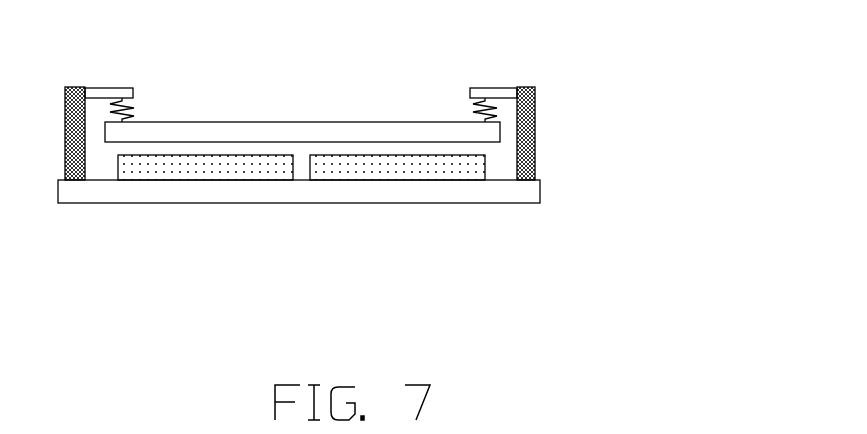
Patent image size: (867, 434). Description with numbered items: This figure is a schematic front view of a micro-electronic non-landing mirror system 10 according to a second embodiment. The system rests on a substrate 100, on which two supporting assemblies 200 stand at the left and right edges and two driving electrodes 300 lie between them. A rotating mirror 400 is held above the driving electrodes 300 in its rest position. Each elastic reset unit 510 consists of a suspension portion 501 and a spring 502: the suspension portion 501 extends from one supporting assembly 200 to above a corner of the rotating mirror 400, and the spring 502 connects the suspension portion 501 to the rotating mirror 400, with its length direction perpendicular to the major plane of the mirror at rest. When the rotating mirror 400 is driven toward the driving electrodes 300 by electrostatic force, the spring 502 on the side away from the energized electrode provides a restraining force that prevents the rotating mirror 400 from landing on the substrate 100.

The micro-electronic non-landing mirror system 10 is at (530, 26).
The substrate 100 is at (531, 196).
The supporting assembly 200 is at (539, 138).
The driving electrode 300 is at (369, 168).
The rotating mirror 400 is at (261, 132).
The suspension portion 501 is at (128, 85).
The spring 502 is at (138, 108).
The elastic reset unit 510 is at (301, 78).